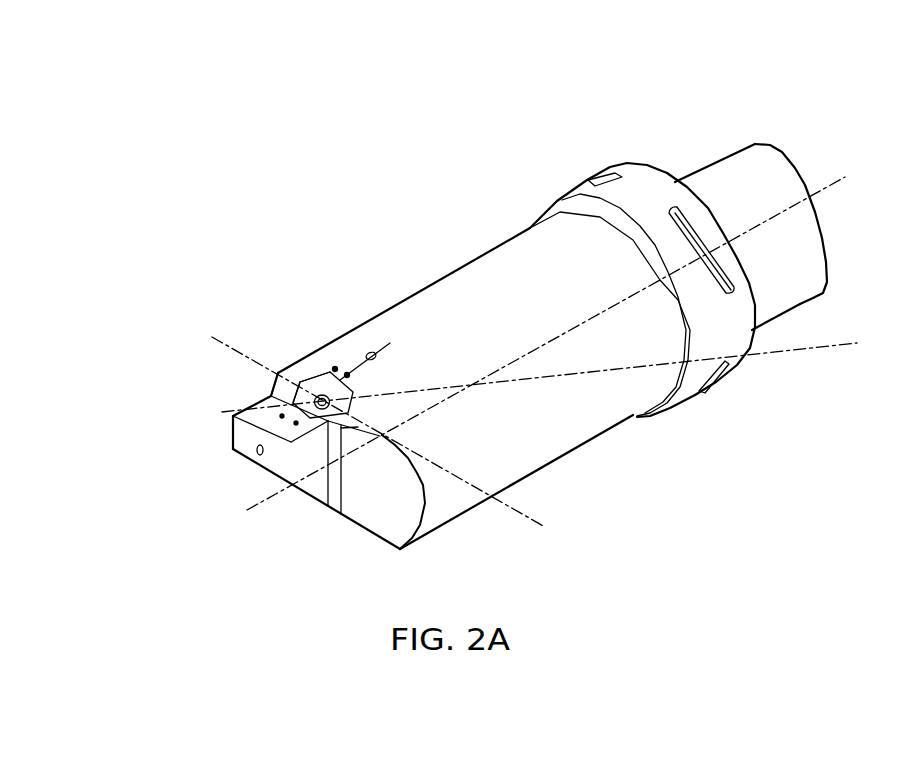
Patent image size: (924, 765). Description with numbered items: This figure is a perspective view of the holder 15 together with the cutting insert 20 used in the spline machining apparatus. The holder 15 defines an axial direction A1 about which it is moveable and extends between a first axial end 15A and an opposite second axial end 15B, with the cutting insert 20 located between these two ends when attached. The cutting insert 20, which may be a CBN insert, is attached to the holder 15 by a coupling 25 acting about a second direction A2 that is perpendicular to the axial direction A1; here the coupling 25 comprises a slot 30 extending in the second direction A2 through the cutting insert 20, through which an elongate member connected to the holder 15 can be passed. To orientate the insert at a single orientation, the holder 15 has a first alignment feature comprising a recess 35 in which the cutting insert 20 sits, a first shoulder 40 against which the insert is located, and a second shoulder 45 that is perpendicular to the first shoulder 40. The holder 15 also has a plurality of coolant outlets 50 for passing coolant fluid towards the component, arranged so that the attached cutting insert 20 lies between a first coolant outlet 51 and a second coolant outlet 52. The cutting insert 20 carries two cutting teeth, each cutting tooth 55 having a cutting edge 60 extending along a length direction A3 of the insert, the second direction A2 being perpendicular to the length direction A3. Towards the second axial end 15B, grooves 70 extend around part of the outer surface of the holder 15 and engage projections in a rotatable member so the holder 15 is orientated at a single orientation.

The holder 15 is at (731, 380).
The first axial end 15A is at (275, 462).
The second axial end 15B is at (798, 166).
The cutting insert 20 is at (270, 397).
The coupling 25 is at (334, 308).
The slot 30 is at (322, 393).
The recess 35 is at (349, 375).
The first shoulder 40 is at (272, 371).
The second shoulder 45 is at (237, 440).
The coolant outlets 50 is at (386, 453).
The first coolant outlet 51 is at (283, 419).
The second coolant outlet 52 is at (377, 355).
The cutting tooth 55 is at (310, 377).
The cutting edge 60 is at (268, 374).
The grooves 70 is at (703, 237).
The axial direction A1 is at (531, 353).
The second direction A2 is at (394, 443).
The length direction A3 is at (556, 369).